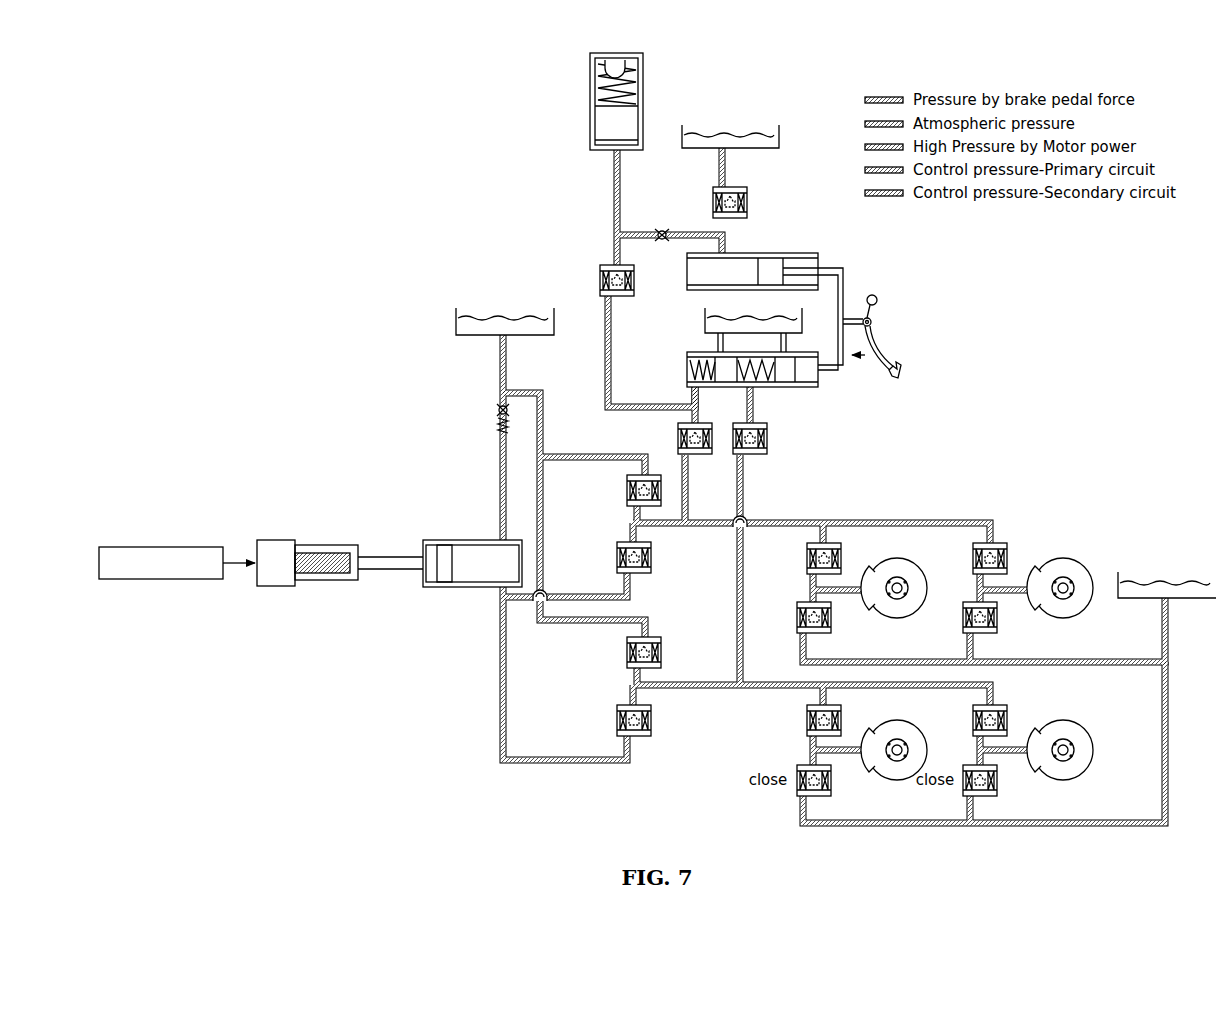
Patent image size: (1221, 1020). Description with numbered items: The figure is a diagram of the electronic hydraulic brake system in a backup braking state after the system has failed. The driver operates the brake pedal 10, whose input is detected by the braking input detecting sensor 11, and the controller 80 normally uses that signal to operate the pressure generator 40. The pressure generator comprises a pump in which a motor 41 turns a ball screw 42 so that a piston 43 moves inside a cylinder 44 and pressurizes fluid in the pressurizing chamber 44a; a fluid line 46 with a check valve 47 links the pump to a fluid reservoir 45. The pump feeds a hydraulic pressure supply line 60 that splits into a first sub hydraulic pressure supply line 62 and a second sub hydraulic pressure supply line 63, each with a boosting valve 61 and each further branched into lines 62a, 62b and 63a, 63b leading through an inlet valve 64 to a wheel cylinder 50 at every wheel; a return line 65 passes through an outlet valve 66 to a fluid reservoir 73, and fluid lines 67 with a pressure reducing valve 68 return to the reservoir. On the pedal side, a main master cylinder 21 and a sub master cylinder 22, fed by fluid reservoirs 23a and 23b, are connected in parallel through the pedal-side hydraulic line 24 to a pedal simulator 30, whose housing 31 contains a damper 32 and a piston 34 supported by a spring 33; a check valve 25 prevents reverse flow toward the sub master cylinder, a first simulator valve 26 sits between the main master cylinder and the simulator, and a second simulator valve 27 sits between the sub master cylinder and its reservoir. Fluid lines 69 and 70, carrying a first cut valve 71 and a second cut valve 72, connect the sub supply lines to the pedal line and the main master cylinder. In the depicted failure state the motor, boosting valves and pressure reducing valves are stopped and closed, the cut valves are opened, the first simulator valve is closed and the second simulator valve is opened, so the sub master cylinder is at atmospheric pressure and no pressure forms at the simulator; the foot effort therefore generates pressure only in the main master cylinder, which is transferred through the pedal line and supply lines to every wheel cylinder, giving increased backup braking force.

The brake pedal 10 is at (967, 353).
The braking input detecting sensor 11 is at (876, 306).
The main master cylinder 21 is at (792, 388).
The sub master cylinder 22 is at (792, 252).
The fluid reservoir 23a is at (704, 318).
The fluid reservoir 23b is at (783, 125).
The pedal-side hydraulic line 24 is at (603, 310).
The check valve 25 is at (662, 229).
The first simulator valve 26 is at (605, 262).
The second simulator valve 27 is at (748, 190).
The pedal simulator 30 is at (624, 82).
The housing 31 is at (592, 104).
The damper 32 is at (622, 58).
The spring 33 is at (603, 80).
The piston 34 is at (602, 125).
The pressure generator 40 is at (383, 574).
The motor 41 is at (276, 590).
The ball screw 42 is at (325, 573).
The piston 43 is at (340, 544).
The cylinder 44 is at (471, 563).
The pressurizing chamber 44a is at (467, 545).
The fluid reservoir 45 is at (455, 312).
The fluid line 46 is at (500, 465).
The check valve 47 is at (497, 408).
The wheel cylinder 50 is at (897, 558).
The hydraulic pressure supply line 60 is at (500, 690).
The boosting valve 61 is at (655, 560).
The first sub hydraulic pressure supply line 62 is at (720, 690).
The hydraulic pressure supply line 62a is at (812, 688).
The hydraulic pressure supply line 62b is at (995, 690).
The second sub hydraulic pressure supply line 63 is at (736, 525).
The hydraulic pressure supply line 63a is at (818, 523).
The hydraulic pressure supply line 63b is at (998, 528).
The inlet valve 64 is at (840, 545).
The return line 65 is at (878, 661).
The outlet valve 66 is at (832, 618).
The fluid line 67 is at (583, 457).
The pressure reducing valve 68 is at (658, 505).
The fluid line 69 is at (688, 512).
The fluid line 70 is at (738, 600).
The first cut valve 71 is at (700, 456).
The second cut valve 72 is at (760, 456).
The fluid reservoir 73 is at (1116, 572).
The controller 80 is at (190, 580).